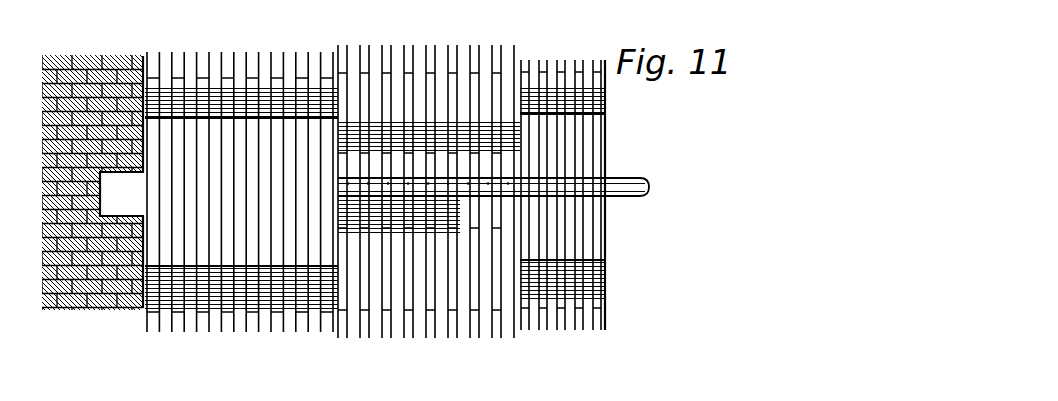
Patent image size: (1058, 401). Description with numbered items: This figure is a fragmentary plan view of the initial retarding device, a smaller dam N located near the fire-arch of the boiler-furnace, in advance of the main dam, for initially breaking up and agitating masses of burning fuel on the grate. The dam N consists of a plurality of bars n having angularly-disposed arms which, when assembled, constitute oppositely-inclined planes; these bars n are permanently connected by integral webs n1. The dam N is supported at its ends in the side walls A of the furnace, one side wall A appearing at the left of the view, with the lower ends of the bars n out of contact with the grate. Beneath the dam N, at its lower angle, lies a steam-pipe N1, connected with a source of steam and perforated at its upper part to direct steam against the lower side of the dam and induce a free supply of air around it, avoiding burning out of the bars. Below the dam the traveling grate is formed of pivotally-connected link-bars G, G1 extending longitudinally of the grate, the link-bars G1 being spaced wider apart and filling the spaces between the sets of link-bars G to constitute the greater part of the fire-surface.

The side wall A is at (100, 285).
The smaller dam N is at (207, 147).
The steam-pipe N1 is at (643, 178).
The bar n is at (205, 250).
The integral web n1 is at (150, 207).
The link-bar G is at (225, 333).
The link-bar G1 is at (542, 320).